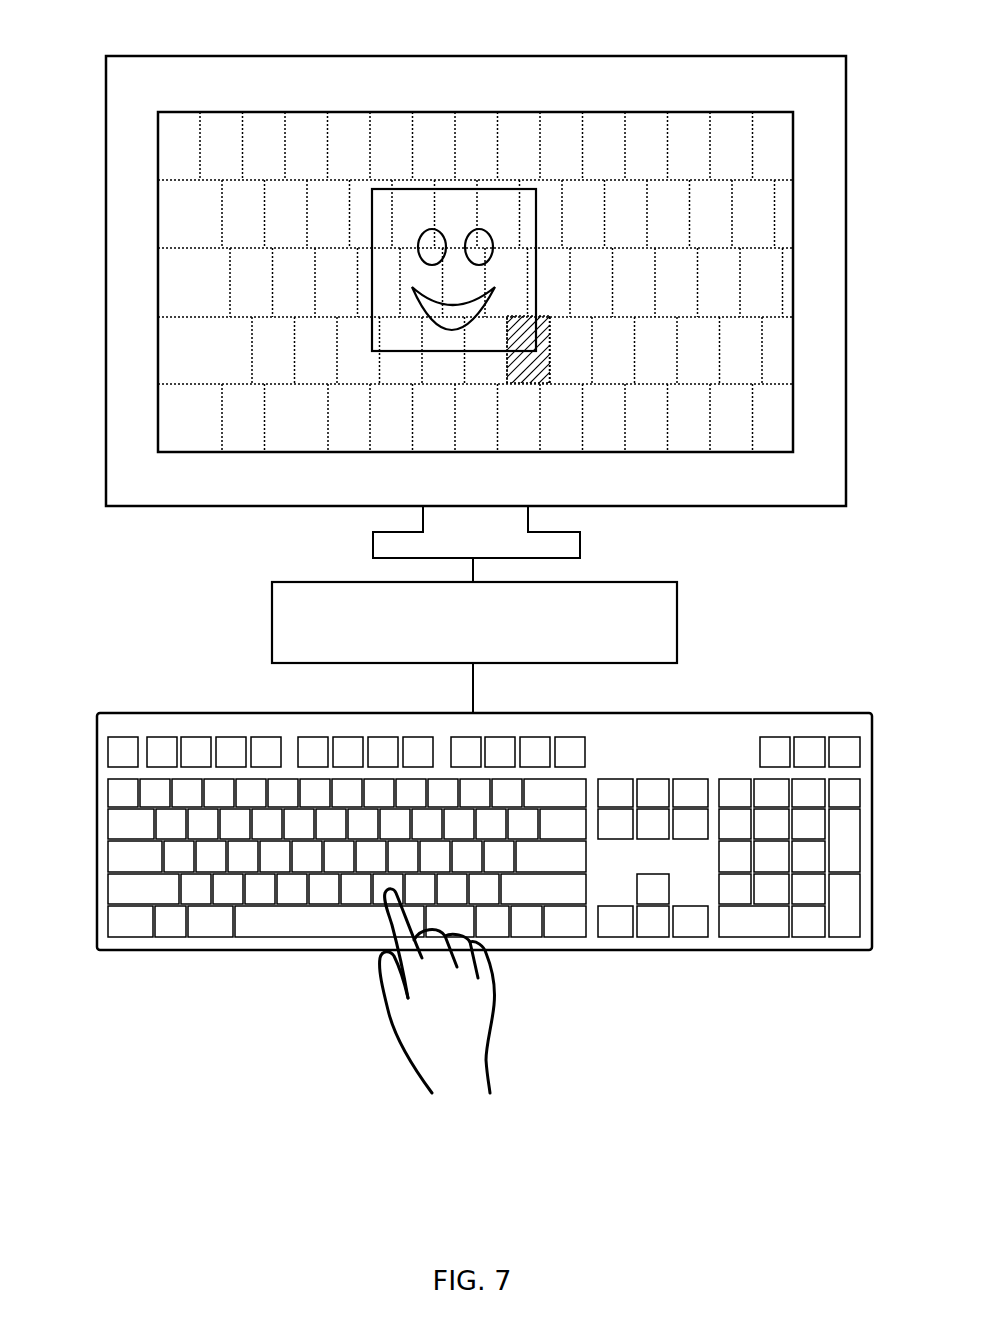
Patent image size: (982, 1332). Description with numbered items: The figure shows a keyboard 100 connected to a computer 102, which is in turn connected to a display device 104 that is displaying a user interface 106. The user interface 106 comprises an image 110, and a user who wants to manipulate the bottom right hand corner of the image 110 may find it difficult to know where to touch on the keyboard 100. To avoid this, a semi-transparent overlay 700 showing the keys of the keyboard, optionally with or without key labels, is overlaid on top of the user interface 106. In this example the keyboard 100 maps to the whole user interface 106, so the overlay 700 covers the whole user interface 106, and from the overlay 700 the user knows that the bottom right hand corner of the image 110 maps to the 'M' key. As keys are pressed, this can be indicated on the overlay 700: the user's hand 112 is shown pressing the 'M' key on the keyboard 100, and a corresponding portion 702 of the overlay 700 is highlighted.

The keyboard 100 is at (835, 713).
The computer 102 is at (670, 582).
The display device 104 is at (798, 56).
The user interface 106 is at (213, 137).
The image 110 is at (490, 189).
The hand 112 is at (490, 1028).
The semi-transparent overlay 700 is at (177, 300).
The portion of the overlay 702 is at (540, 384).